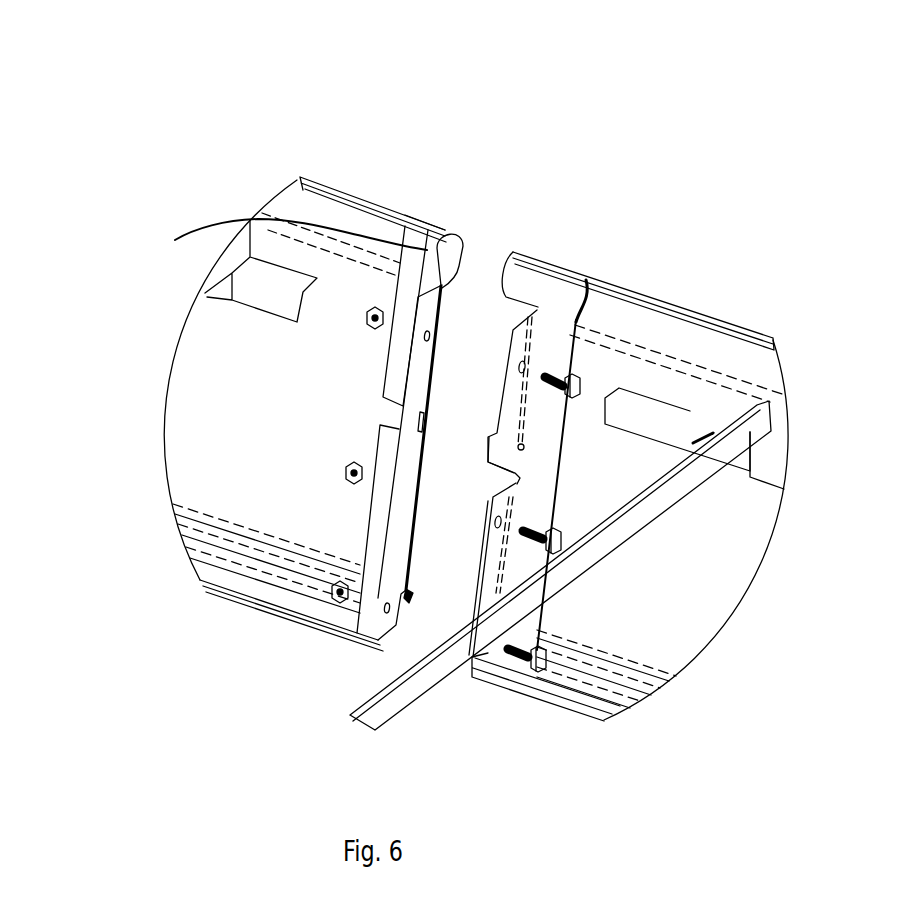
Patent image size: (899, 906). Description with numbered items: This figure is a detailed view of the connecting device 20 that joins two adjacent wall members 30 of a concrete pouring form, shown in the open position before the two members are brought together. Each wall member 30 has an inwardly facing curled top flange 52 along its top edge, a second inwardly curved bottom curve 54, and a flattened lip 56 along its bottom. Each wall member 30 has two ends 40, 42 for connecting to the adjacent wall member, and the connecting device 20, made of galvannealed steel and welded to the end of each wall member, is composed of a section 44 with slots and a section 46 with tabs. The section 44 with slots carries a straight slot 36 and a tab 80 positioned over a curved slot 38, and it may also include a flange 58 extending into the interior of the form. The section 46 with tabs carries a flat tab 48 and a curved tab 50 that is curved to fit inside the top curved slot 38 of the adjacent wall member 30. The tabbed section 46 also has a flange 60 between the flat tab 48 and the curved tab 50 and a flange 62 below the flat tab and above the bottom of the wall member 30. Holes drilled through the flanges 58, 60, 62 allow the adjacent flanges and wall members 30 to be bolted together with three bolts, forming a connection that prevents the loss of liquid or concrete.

The connecting device 20 is at (517, 212).
The wall member 30 is at (330, 185).
The straight slot 36 is at (425, 418).
The curved slot 38 is at (457, 232).
The end 40 is at (403, 600).
The end 42 is at (477, 673).
The section with slots 44 is at (393, 387).
The section with tabs 46 is at (558, 338).
The flat tab 48 is at (490, 463).
The curved tab 50 is at (520, 258).
The curled top flange 52 is at (418, 218).
The bottom curve 54 is at (407, 600).
The flattened lip 56 is at (258, 612).
The flange 58 is at (398, 540).
The flange 60 is at (527, 420).
The flange 62 is at (480, 575).
The tab 80 is at (278, 226).